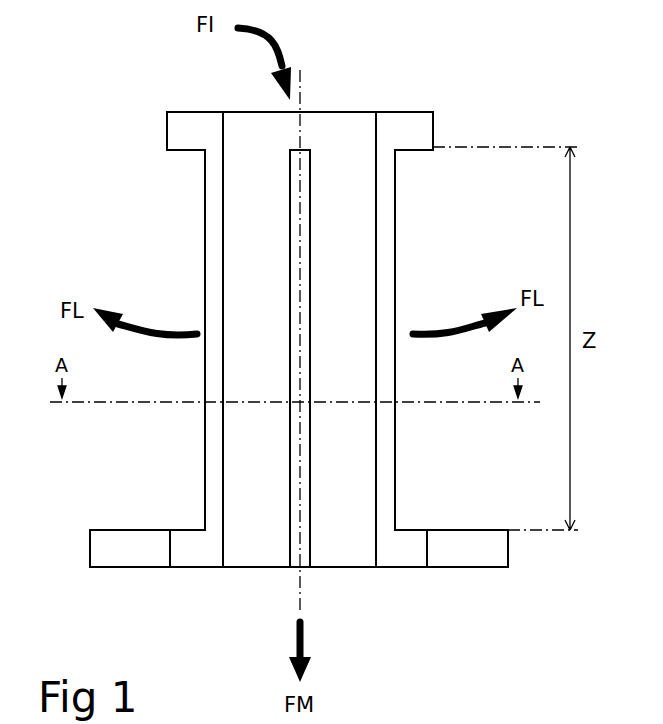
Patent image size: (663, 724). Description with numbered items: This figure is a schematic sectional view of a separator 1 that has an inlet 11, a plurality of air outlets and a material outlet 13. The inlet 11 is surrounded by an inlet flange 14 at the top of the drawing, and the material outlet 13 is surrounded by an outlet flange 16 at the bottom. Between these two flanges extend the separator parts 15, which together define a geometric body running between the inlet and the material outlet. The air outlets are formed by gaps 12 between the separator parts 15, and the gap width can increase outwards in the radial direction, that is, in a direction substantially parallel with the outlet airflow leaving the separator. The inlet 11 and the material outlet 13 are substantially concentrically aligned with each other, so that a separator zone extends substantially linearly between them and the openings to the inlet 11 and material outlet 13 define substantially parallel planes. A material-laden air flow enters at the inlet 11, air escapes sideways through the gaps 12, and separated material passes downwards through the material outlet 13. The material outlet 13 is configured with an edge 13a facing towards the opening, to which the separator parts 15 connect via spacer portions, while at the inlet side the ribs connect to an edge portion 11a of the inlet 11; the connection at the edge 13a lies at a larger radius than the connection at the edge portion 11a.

The separator 1 is at (73, 206).
The inlet 11 is at (320, 100).
The edge portion of the material inlet 11a is at (224, 134).
The gap 12 is at (305, 149).
The material outlet 13 is at (348, 578).
The edge 13a is at (171, 545).
The inlet flange 14 is at (417, 112).
The separator part 15 is at (348, 222).
The outlet flange 16 is at (508, 545).